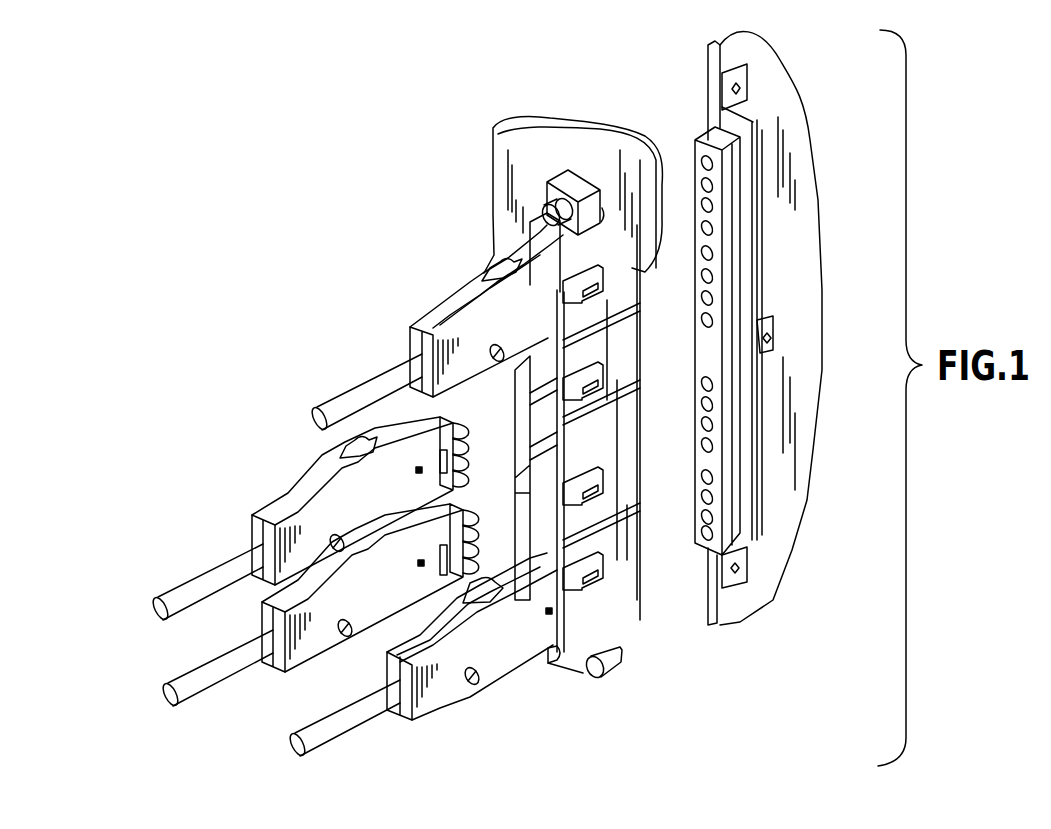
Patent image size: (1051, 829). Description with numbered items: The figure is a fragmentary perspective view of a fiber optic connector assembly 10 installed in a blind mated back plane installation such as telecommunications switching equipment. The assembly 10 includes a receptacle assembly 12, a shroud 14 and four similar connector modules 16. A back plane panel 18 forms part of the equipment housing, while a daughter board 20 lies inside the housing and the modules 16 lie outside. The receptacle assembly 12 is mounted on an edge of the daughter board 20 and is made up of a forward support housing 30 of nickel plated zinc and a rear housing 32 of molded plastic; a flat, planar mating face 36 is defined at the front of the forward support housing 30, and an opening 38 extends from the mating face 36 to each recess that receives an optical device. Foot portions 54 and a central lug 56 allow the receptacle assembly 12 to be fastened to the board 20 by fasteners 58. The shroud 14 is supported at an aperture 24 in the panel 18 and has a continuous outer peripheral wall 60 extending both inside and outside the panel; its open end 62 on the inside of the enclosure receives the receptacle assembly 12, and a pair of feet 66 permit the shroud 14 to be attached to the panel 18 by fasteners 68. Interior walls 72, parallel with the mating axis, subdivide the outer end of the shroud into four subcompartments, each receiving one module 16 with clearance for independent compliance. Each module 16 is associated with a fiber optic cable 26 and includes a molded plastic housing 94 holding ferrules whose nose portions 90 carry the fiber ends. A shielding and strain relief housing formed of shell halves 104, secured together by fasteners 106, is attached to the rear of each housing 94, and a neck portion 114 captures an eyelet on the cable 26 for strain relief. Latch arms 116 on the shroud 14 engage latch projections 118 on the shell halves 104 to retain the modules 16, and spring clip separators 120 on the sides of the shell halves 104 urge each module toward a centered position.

The fiber optic connector assembly 10 is at (378, 136).
The receptacle assembly 12 is at (757, 110).
The shroud 14 is at (603, 634).
The connector modules 16 is at (430, 306).
The back plane panel 18 is at (540, 135).
The daughter board 20 is at (818, 418).
The aperture 24 is at (604, 216).
The fiber optic cable 26 is at (360, 386).
The forward support housing 30 is at (733, 535).
The rear housing 32 is at (762, 280).
The mating face 36 is at (707, 363).
The opening 38 is at (710, 228).
The foot portions 54 is at (742, 68).
The central lug 56 is at (773, 320).
The fasteners 58 is at (742, 90).
The outer peripheral wall 60 is at (628, 538).
The open end 62 is at (642, 577).
The feet 66 is at (580, 165).
The fasteners 68 is at (552, 200).
The interior walls 72 is at (562, 345).
The nose portion 90 is at (464, 445).
The module housing 94 is at (440, 455).
The shell halves 104 is at (480, 277).
The fasteners 106 is at (480, 670).
The neck portion 114 is at (430, 334).
The latch arms 116 is at (557, 307).
The latch projections 118 is at (416, 476).
The spring clip separators 120 is at (497, 263).